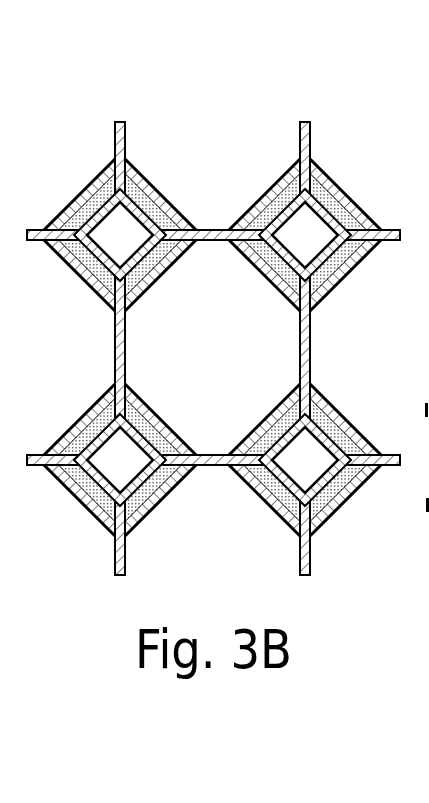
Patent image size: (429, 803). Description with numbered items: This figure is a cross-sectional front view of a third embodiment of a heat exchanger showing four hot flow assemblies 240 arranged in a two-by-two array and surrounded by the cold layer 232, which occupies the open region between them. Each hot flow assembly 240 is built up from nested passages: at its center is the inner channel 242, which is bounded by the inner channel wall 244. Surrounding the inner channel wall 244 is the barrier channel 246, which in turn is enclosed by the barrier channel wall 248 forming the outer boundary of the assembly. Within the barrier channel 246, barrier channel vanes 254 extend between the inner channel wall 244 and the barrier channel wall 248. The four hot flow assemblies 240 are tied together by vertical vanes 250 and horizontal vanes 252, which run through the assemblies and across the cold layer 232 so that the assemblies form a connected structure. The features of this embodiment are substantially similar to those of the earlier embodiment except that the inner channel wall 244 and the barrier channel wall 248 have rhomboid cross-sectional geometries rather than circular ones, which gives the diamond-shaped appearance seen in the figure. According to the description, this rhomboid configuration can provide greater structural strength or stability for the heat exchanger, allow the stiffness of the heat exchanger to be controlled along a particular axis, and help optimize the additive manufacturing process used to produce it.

The cold layer 232 is at (230, 358).
The hot flow assembly 240 is at (347, 160).
The inner channel 242 is at (117, 229).
The inner channel wall 244 is at (82, 187).
The barrier channel 246 is at (137, 190).
The barrier channel wall 248 is at (163, 188).
The vertical vanes 250 is at (113, 353).
The horizontal vanes 252 is at (213, 467).
The barrier channel vanes 254 is at (308, 193).